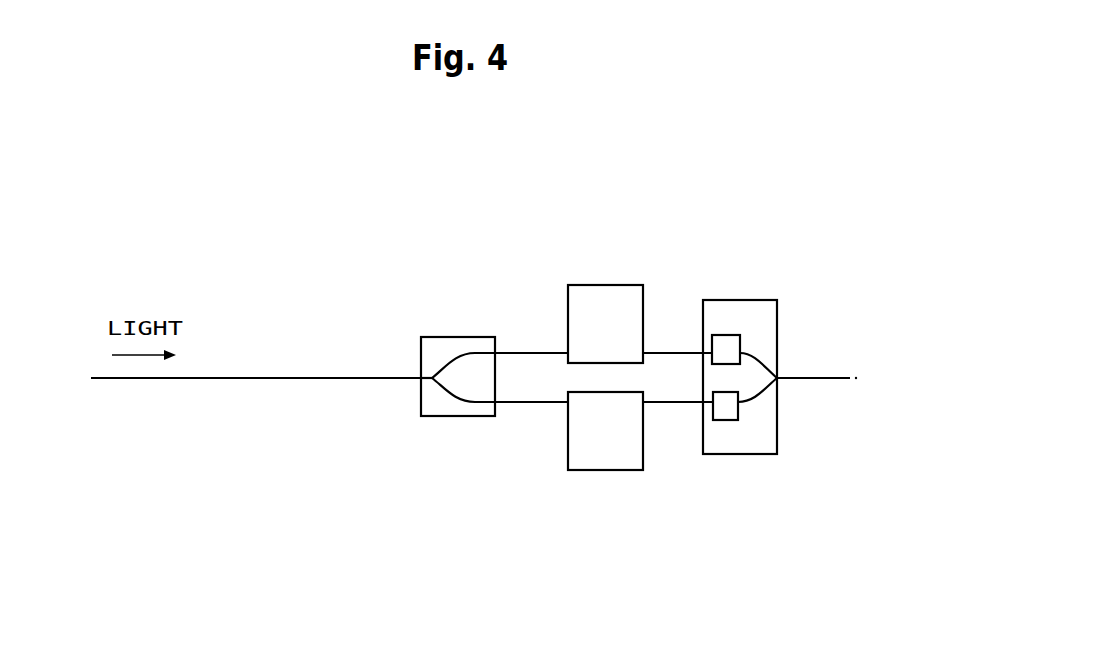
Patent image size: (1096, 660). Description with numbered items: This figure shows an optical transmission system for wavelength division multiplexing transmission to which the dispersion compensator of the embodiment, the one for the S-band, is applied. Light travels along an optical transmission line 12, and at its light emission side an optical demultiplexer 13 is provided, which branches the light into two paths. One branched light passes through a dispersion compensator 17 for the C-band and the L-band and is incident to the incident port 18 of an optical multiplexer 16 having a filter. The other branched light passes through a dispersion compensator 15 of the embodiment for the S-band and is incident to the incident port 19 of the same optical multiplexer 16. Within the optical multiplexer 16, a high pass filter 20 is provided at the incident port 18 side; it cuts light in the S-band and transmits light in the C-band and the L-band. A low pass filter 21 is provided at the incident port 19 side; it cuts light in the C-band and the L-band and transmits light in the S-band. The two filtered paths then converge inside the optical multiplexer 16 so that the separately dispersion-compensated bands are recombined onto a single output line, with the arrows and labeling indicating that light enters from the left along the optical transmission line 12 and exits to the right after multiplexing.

The optical transmission line 12 is at (263, 380).
The optical demultiplexer 13 is at (455, 416).
The dispersion compensator for S-band 15 is at (602, 470).
The optical multiplexer having a filter 16 is at (757, 454).
The dispersion compensator for C-band and L-band 17 is at (601, 285).
The incident port 18 is at (700, 350).
The incident port 19 is at (701, 405).
The high pass filter 20 is at (725, 335).
The low pass filter 21 is at (723, 420).